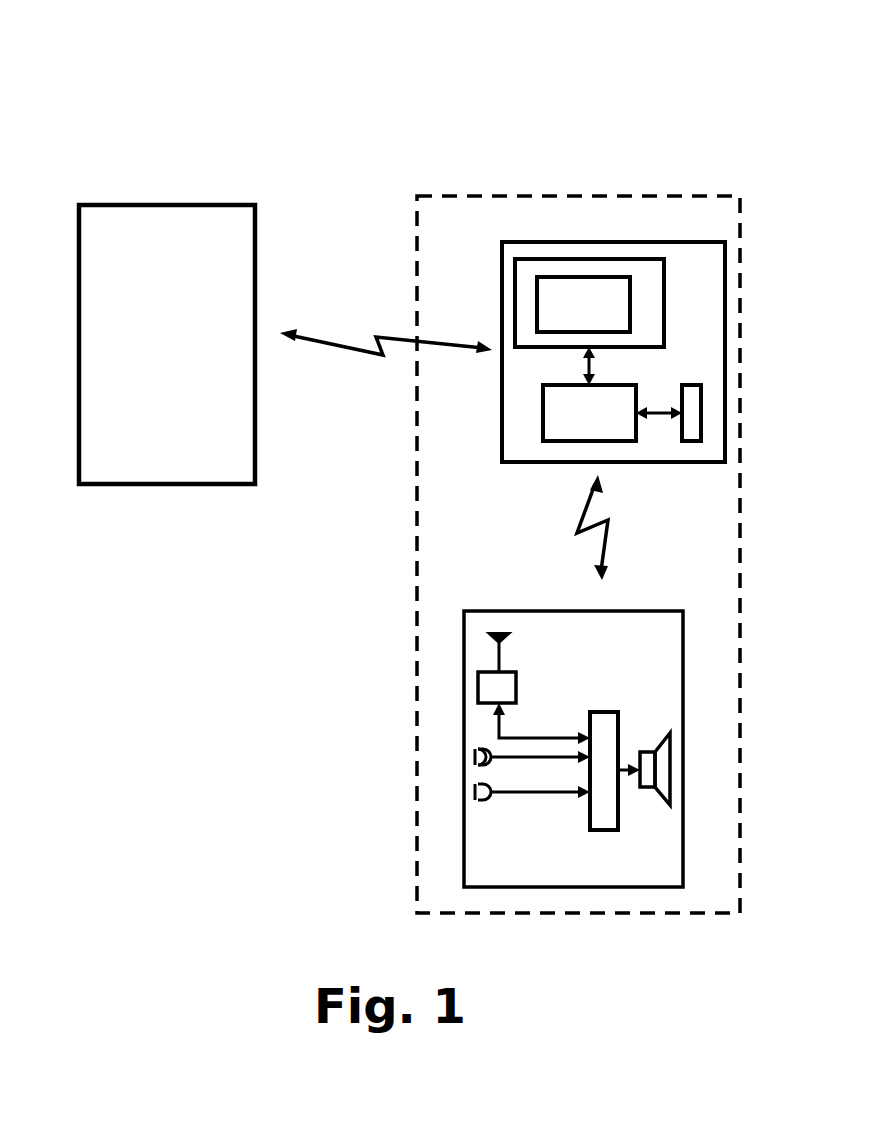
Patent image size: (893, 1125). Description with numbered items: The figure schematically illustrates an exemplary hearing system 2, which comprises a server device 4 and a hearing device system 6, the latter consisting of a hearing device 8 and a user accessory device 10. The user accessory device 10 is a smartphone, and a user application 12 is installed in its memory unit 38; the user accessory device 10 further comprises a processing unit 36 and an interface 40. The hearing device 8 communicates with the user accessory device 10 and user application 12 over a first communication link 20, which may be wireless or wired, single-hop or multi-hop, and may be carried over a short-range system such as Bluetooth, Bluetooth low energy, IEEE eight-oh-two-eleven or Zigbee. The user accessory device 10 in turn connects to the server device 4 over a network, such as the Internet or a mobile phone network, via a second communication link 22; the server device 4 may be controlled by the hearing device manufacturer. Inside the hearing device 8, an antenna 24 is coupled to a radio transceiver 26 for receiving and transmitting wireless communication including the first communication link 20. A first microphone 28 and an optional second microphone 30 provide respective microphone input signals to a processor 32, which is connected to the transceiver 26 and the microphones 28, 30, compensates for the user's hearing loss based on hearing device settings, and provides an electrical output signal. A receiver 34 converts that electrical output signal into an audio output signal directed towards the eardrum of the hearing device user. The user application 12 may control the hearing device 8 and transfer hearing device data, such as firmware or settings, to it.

The hearing system 2 is at (315, 102).
The server device 4 is at (99, 202).
The hearing device system 6 is at (547, 196).
The hearing device 8 is at (642, 887).
The user accessory device 10 is at (660, 242).
The user application 12 is at (592, 277).
The first communication link 20 is at (585, 515).
The second communication link 22 is at (328, 347).
The antenna 24 is at (487, 632).
The radio transceiver 26 is at (478, 683).
The first microphone 28 is at (475, 753).
The second microphone 30 is at (475, 797).
The processor 32 is at (602, 712).
The receiver 34 is at (665, 737).
The processing unit 36 is at (542, 412).
The memory unit 38 is at (518, 302).
The interface 40 is at (687, 441).